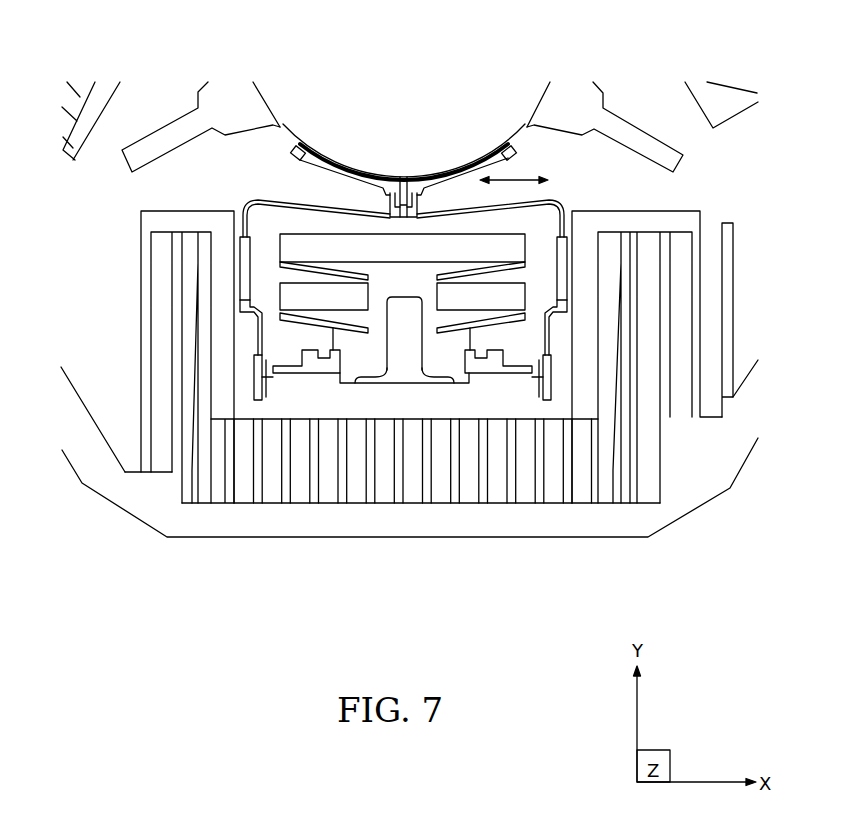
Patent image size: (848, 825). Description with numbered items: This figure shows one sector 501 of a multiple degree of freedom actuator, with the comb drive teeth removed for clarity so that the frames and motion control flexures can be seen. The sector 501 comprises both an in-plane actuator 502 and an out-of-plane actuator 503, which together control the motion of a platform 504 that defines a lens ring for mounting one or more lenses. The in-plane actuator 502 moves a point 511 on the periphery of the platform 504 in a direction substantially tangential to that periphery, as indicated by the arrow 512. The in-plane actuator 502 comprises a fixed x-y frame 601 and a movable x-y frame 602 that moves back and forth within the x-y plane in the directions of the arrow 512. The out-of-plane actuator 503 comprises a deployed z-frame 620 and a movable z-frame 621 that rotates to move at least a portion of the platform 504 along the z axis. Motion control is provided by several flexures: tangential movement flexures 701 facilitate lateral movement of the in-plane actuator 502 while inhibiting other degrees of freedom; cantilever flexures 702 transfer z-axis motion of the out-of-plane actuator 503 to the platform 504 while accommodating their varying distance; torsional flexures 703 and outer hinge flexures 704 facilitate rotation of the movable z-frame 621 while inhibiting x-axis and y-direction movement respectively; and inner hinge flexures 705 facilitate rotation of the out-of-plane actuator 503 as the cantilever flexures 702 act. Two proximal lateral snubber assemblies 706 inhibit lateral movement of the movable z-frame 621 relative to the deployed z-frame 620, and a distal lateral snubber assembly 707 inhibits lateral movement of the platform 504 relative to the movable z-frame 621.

The sector 501 is at (97, 575).
The in-plane actuator 502 is at (470, 519).
The out-of-plane actuator 503 is at (549, 191).
The platform 504 is at (292, 128).
The point 511 is at (403, 177).
The arrow 512 is at (520, 176).
The fixed x-y frame 601 is at (213, 527).
The movable x-y frame 602 is at (588, 225).
The deployed z-frame 620 is at (424, 292).
The movable z-frame 621 is at (306, 218).
The tangential movement flexure 701 is at (193, 418).
The cantilever flexure 702 is at (252, 200).
The torsional flexure 703 is at (299, 381).
The outer hinge flexure 704 is at (268, 380).
The inner hinge flexure 705 is at (240, 266).
The proximal lateral snubber assembly 706 is at (342, 355).
The distal lateral snubber assembly 707 is at (424, 208).